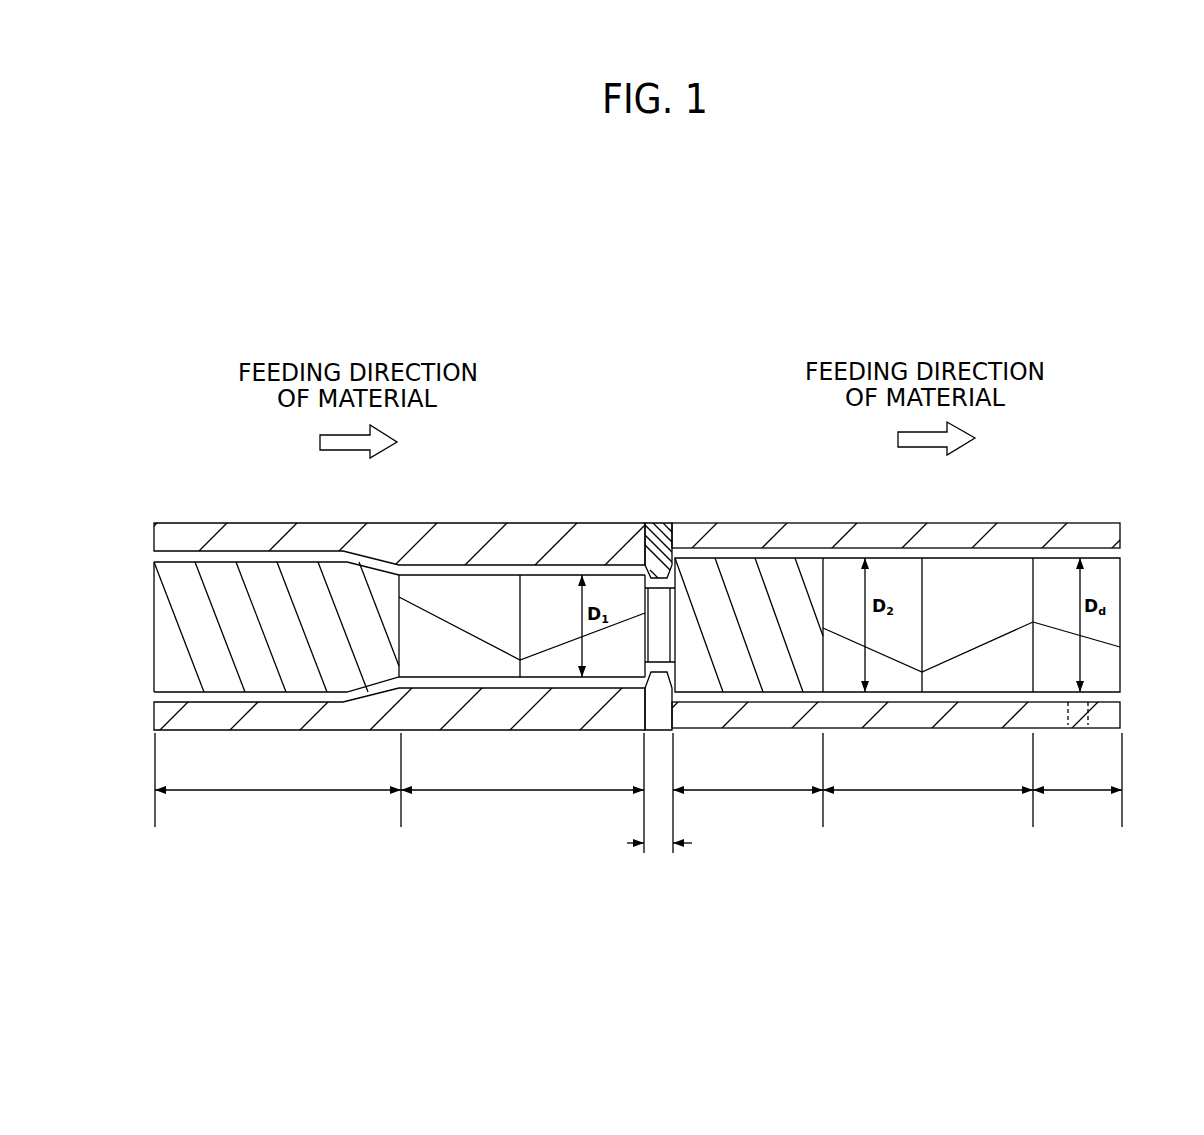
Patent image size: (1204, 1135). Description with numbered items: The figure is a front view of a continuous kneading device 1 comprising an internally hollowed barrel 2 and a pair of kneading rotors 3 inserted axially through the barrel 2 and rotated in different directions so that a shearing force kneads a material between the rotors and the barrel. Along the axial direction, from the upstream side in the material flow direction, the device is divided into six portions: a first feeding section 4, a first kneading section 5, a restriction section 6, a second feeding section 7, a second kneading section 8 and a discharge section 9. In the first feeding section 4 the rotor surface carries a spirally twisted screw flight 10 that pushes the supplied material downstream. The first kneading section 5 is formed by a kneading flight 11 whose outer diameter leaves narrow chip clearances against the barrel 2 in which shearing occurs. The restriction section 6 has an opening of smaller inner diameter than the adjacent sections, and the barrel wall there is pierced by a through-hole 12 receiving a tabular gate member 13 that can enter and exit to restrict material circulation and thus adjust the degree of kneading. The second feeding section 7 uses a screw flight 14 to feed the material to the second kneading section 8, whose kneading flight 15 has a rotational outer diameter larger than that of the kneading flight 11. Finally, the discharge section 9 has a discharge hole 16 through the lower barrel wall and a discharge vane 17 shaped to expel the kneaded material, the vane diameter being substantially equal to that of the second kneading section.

The continuous kneading device 1 is at (873, 282).
The barrel 2 is at (1088, 533).
The kneading rotors 3 is at (1117, 603).
The first feeding section 4 is at (278, 791).
The first kneading section 5 is at (522, 793).
The restriction section 6 is at (659, 828).
The second feeding section 7 is at (748, 800).
The second kneading section 8 is at (928, 799).
The discharge section 9 is at (1077, 787).
The screw flight 10 is at (210, 592).
The kneading flight 11 is at (447, 617).
The through-hole 12 is at (650, 524).
The gate member 13 is at (667, 523).
The screw flight 14 is at (765, 577).
The kneading flight 15 is at (1003, 632).
The discharge hole 16 is at (1085, 712).
The discharge vane 17 is at (1107, 643).